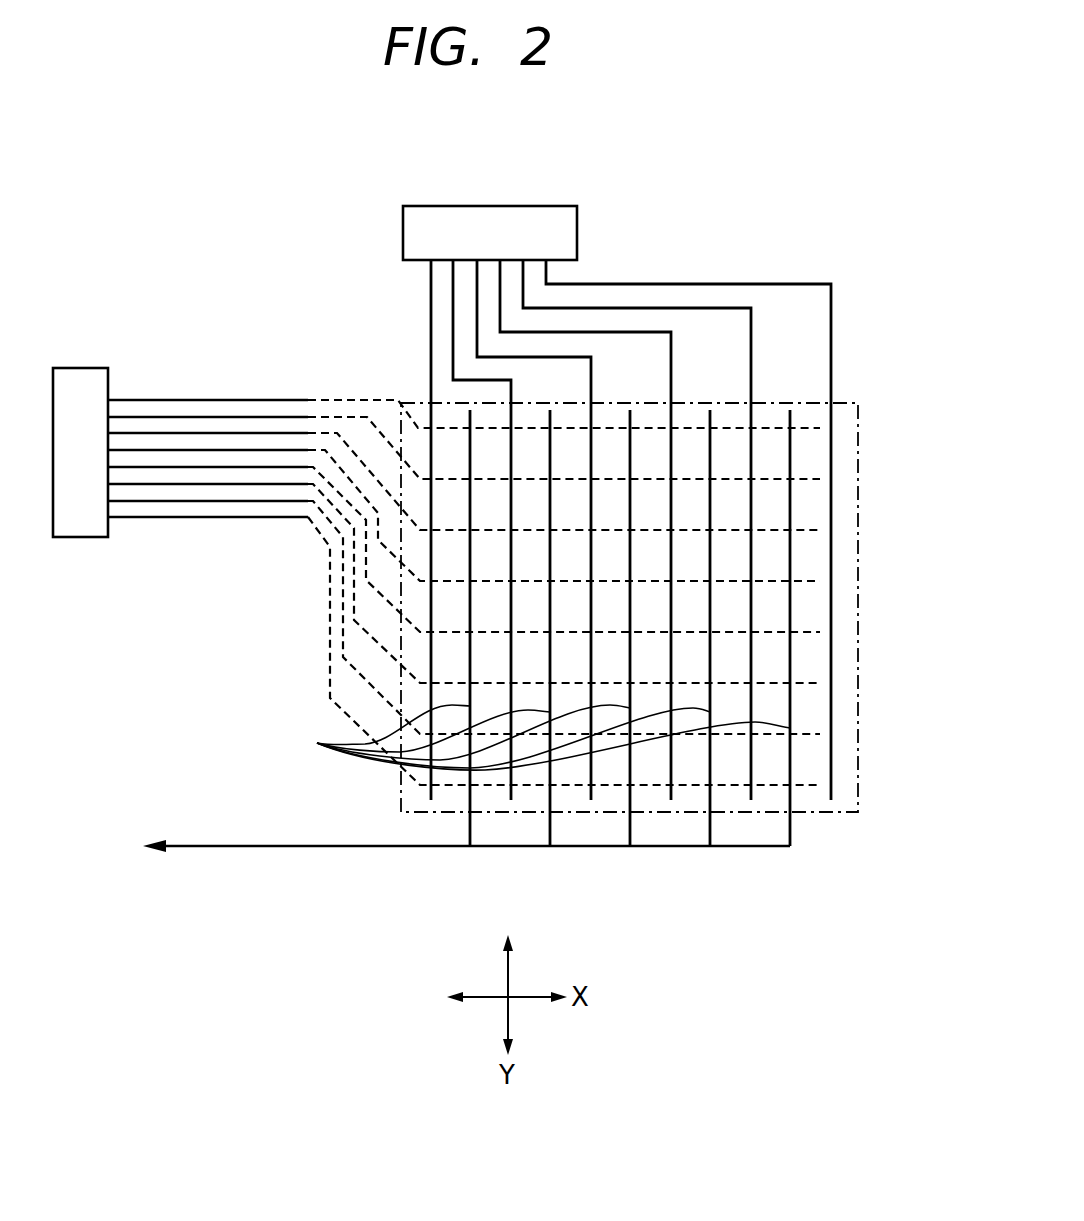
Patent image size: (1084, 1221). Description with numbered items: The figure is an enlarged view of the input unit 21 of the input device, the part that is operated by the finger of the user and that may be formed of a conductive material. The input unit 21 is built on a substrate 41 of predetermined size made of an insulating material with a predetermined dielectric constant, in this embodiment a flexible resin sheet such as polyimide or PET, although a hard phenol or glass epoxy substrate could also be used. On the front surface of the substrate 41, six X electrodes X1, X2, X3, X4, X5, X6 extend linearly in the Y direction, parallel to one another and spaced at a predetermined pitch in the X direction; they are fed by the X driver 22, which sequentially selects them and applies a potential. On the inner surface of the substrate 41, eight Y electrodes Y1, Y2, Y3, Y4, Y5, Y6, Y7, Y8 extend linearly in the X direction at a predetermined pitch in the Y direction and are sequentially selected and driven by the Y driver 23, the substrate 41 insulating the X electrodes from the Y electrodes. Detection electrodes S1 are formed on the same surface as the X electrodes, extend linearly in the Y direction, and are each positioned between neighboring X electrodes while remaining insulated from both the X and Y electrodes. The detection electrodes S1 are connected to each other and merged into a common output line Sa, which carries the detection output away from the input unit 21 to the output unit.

The input unit 21 is at (817, 882).
The X driver 22 is at (505, 205).
The Y driver 23 is at (91, 367).
The substrate 41 is at (600, 813).
The common output line Sa is at (257, 848).
The detection electrodes S1 is at (536, 737).
The X electrode X1 is at (431, 392).
The X electrode X2 is at (513, 393).
The X electrode X3 is at (593, 393).
The X electrode X4 is at (673, 393).
The X electrode X5 is at (753, 393).
The X electrode X6 is at (832, 338).
The Y electrode Y1 is at (818, 428).
The Y electrode Y2 is at (818, 479).
The Y electrode Y3 is at (818, 530).
The Y electrode Y4 is at (818, 581).
The Y electrode Y5 is at (818, 632).
The Y electrode Y6 is at (818, 683).
The Y electrode Y7 is at (818, 734).
The Y electrode Y8 is at (818, 785).